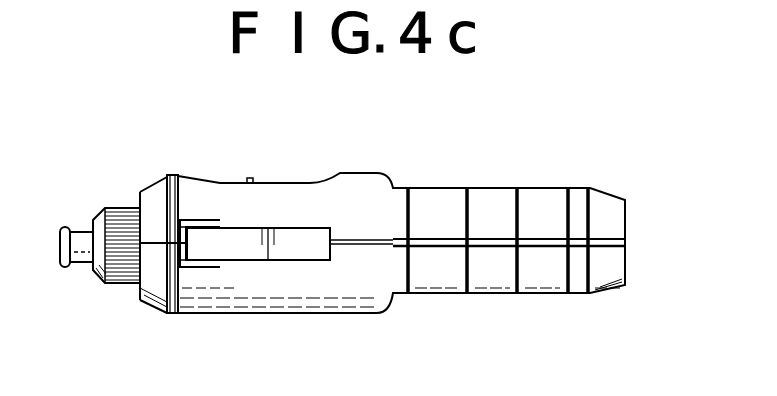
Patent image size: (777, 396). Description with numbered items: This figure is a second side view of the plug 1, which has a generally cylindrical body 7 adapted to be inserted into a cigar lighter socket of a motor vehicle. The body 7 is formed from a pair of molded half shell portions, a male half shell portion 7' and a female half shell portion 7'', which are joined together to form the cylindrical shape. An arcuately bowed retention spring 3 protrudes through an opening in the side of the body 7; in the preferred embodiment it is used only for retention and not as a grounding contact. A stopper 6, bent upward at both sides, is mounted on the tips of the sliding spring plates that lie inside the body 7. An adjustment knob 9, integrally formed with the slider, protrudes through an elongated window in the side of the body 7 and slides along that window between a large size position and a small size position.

The plug 1 is at (342, 233).
The retention spring 3 is at (287, 252).
The stopper 6 is at (207, 221).
The body 7 is at (528, 217).
The male half shell portion 7' is at (418, 182).
The female half shell portion 7'' is at (442, 301).
The adjustment knob 9 is at (250, 180).